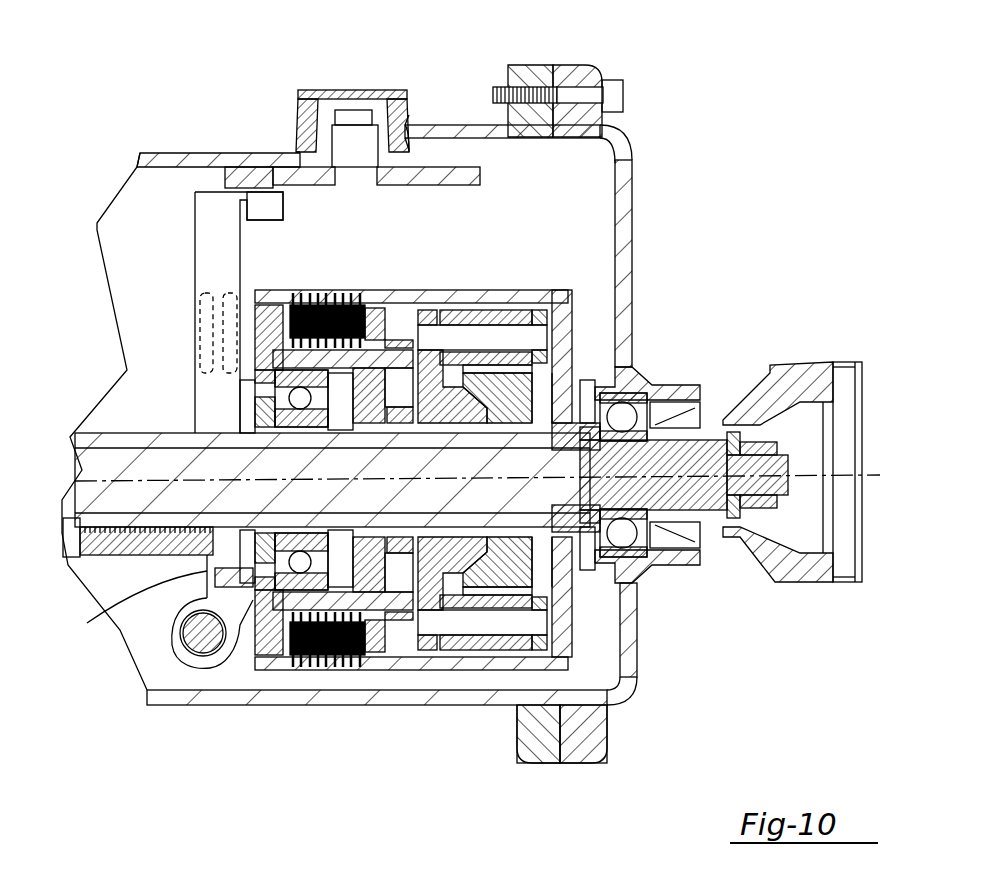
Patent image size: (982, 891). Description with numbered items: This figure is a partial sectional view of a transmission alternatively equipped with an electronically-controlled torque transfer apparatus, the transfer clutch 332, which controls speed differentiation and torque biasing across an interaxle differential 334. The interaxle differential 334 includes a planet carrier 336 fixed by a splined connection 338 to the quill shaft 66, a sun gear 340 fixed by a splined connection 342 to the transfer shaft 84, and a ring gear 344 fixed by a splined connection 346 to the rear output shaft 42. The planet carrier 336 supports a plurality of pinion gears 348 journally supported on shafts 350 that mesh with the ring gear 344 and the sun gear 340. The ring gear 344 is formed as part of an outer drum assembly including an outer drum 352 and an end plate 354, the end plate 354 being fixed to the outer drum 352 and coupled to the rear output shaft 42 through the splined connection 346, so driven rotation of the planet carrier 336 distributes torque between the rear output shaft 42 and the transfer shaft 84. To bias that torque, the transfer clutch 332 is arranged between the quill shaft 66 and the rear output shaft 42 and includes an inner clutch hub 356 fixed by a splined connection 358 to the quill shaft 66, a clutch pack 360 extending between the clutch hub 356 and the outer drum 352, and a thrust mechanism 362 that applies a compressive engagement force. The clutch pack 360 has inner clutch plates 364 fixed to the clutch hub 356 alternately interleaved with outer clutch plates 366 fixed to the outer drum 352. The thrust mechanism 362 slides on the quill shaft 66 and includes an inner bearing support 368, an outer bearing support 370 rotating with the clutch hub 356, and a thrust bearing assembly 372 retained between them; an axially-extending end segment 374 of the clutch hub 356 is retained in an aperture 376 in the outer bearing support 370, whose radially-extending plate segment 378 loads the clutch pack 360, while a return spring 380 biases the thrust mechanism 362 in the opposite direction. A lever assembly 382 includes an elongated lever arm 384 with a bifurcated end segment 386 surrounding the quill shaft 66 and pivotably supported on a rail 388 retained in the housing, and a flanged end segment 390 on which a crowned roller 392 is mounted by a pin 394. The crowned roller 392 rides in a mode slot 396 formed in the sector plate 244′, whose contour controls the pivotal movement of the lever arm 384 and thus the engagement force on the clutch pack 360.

The rear output shaft 42 is at (717, 425).
The quill shaft 66 is at (340, 378).
The transfer shaft 84 is at (175, 530).
The sector plate 244′ is at (428, 176).
The transfer clutch 332 is at (275, 665).
The interaxle differential 334 is at (550, 377).
The planet carrier 336 is at (413, 657).
The splined connection 338 is at (448, 438).
The sun gear 340 is at (510, 400).
The splined connection 342 is at (483, 437).
The ring gear 344 is at (443, 652).
The splined connection 346 is at (565, 603).
The pinion gears 348 is at (500, 300).
The shafts 350 is at (583, 380).
The outer drum 352 is at (433, 290).
The end plate 354 is at (583, 630).
The inner clutch hub 356 is at (435, 433).
The splined connection 358 is at (397, 515).
The clutch pack 360 is at (327, 300).
The thrust mechanism 362 is at (246, 391).
The inner clutch plates 364 is at (353, 652).
The outer clutch plates 366 is at (307, 652).
The inner bearing support 368 is at (252, 432).
The outer bearing support 370 is at (255, 660).
The thrust bearing assembly 372 is at (298, 402).
The end segment 374 is at (247, 350).
The aperture 376 is at (265, 345).
The plate segment 378 is at (282, 640).
The return spring 380 is at (332, 372).
The lever assembly 382 is at (185, 645).
The lever arm 384 is at (210, 398).
The bifurcated end segment 386 is at (207, 571).
The rail 388 is at (185, 593).
The flanged end segment 390 is at (273, 205).
The crowned roller 392 is at (250, 178).
The pin 394 is at (222, 178).
The mode slot 396 is at (270, 172).